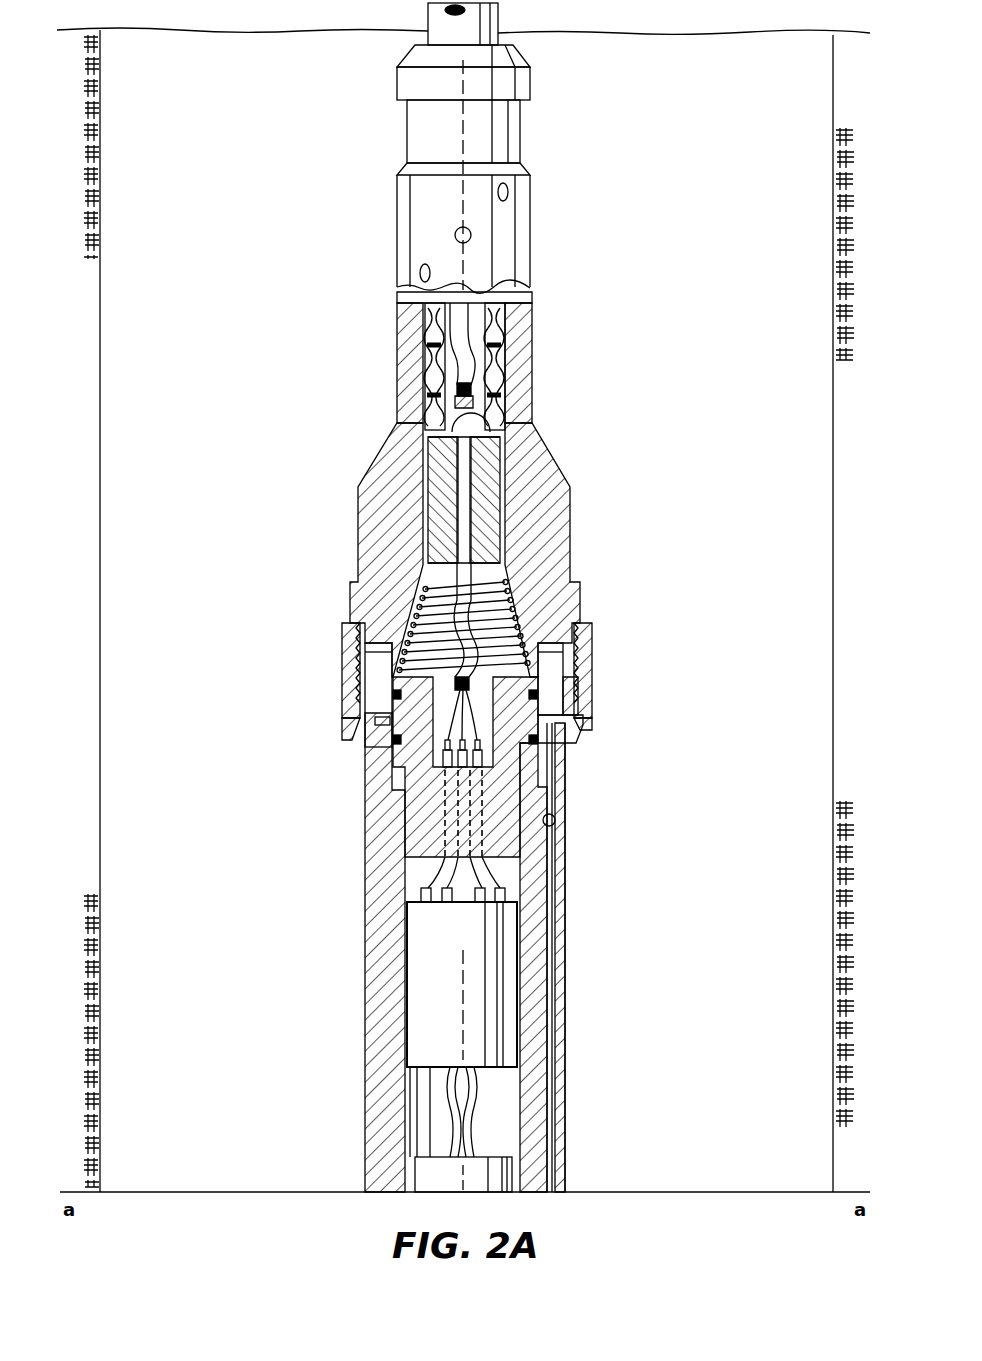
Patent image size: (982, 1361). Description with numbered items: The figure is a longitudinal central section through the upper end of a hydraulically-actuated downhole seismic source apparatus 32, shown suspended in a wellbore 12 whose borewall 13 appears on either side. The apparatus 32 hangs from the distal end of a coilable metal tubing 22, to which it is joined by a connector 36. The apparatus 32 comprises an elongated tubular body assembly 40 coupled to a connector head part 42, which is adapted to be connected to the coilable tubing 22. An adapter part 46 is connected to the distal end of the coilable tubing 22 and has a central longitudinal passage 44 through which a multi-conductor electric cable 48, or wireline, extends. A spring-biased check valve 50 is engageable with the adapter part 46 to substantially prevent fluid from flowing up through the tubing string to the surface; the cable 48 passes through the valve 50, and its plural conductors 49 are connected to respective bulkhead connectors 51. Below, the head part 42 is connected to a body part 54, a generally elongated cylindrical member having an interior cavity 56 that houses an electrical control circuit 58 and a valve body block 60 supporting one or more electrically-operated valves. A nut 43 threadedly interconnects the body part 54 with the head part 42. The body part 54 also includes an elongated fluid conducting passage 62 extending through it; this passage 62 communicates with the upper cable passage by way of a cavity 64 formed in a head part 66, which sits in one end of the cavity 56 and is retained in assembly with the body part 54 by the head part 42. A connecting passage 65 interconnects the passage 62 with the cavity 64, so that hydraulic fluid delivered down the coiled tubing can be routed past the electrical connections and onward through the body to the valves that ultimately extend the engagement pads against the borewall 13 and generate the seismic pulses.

The wellbore 12 is at (104, 898).
The borewall 13 is at (102, 1058).
The coilable metal tubing 22 is at (498, 24).
The downhole seismic source apparatus 32 is at (572, 951).
The connector 36 is at (532, 362).
The elongated tubular body assembly 40 is at (566, 861).
The connector head part 42 is at (570, 522).
The nut 43 is at (592, 634).
The central longitudinal passage 44 is at (438, 318).
The adapter part 46 is at (495, 315).
The multi-conductor electric cable 48 is at (472, 372).
The conductors 49 is at (455, 748).
The spring-biased check valve 50 is at (456, 412).
The bulkhead connectors 51 is at (448, 775).
The body part 54 is at (566, 1098).
The interior cavity 56 is at (510, 1122).
The electrical control circuit 58 is at (480, 937).
The valve body block 60 is at (418, 1168).
The fluid conducting passage 62 is at (555, 820).
The cavity 64 is at (556, 694).
The connecting passage 65 is at (580, 728).
The head part 66 is at (530, 762).